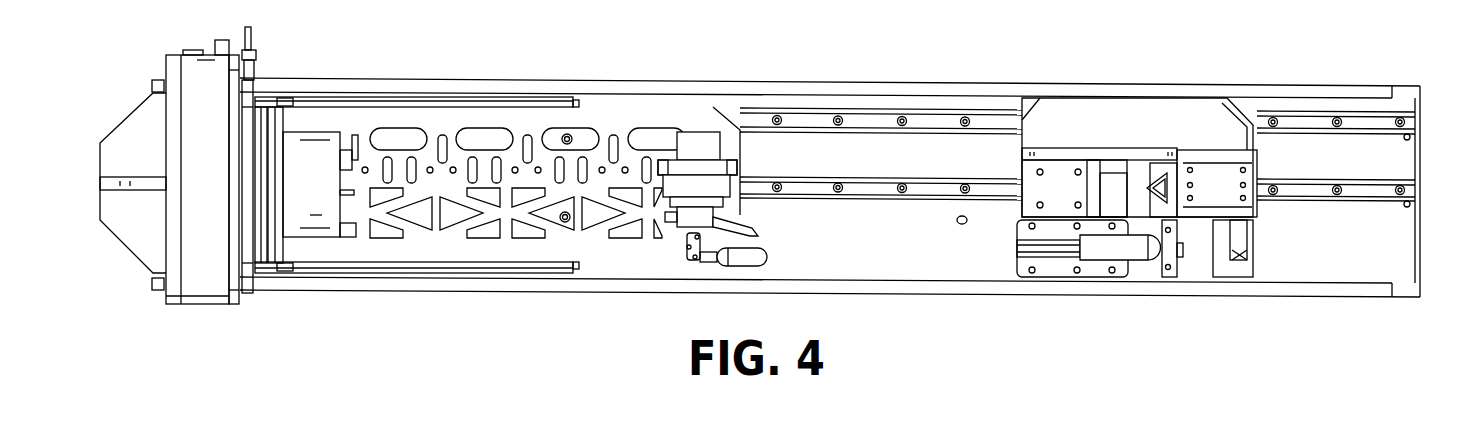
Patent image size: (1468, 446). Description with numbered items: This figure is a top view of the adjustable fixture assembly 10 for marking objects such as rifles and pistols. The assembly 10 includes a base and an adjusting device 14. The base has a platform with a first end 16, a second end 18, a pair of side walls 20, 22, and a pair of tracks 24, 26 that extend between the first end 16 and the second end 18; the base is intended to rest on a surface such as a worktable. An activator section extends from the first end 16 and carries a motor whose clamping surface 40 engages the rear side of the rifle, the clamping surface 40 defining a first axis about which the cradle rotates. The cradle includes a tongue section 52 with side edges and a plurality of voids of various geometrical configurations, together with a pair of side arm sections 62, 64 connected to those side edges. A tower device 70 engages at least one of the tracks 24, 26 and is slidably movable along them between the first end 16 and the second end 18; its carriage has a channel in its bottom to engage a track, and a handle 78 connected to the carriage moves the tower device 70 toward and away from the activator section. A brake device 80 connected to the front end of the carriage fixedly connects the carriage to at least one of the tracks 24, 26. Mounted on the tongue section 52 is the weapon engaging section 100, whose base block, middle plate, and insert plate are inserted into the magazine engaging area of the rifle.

The adjustable fixture assembly 10 is at (996, 302).
The adjusting device 14 is at (191, 97).
The first end 16 is at (200, 304).
The second end 18 is at (1422, 220).
The side wall 20 is at (875, 298).
The side wall 22 is at (849, 80).
The track 24 is at (1313, 190).
The track 26 is at (1367, 121).
The clamping surface 40 is at (315, 147).
The tongue section 52 is at (530, 122).
The side arm section 62 is at (395, 272).
The side arm section 64 is at (435, 95).
The tower device 70 is at (1202, 144).
The handle 78 is at (1140, 260).
The brake device 80 is at (1247, 245).
The weapon engaging section 100 is at (703, 146).